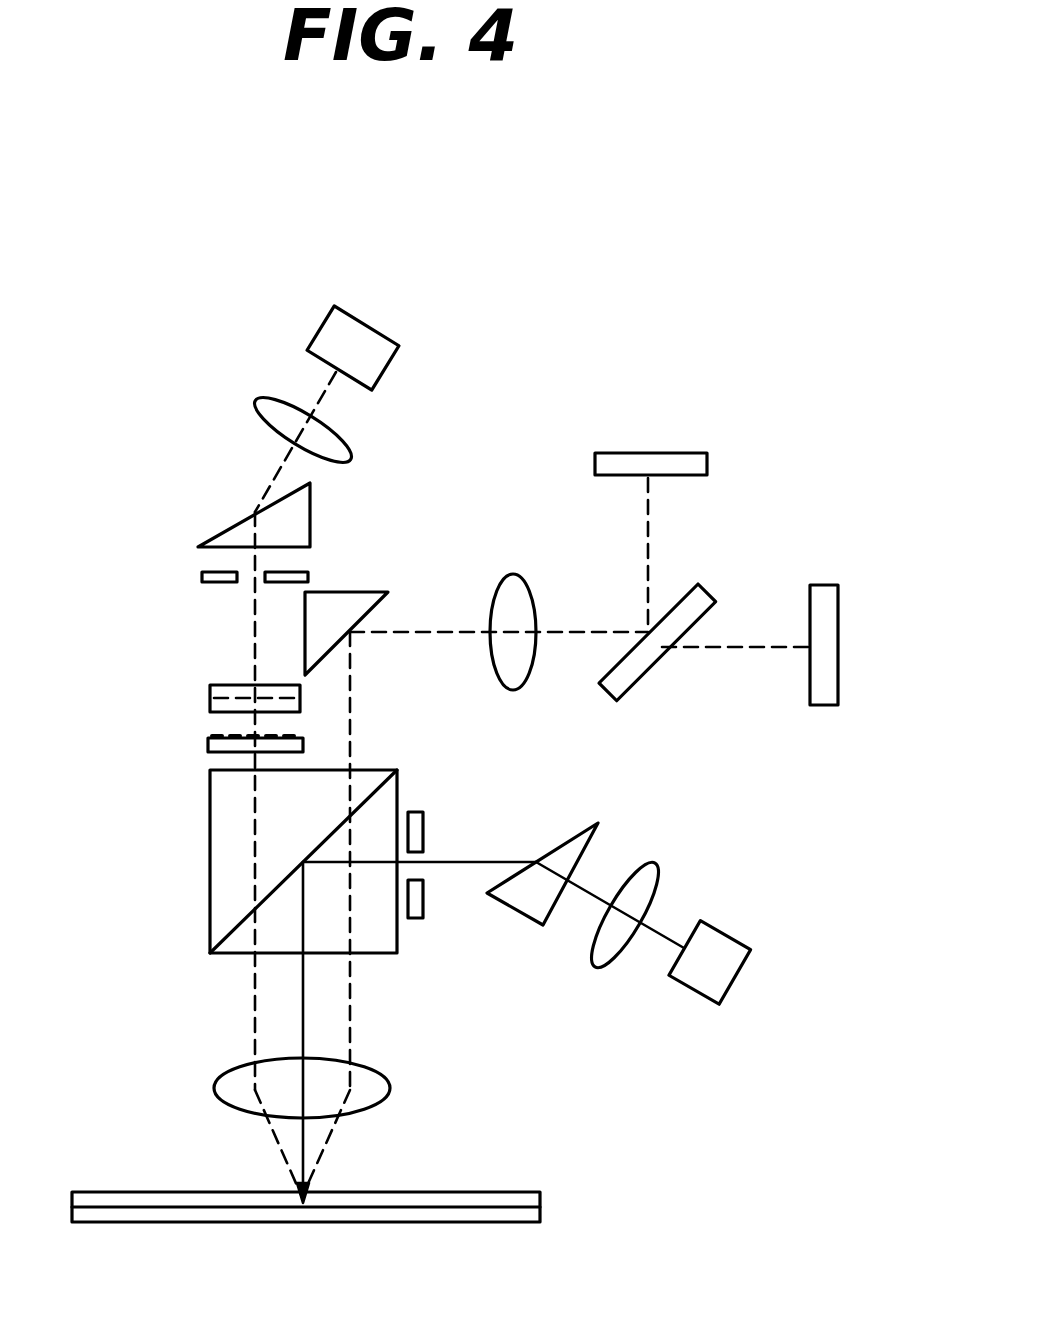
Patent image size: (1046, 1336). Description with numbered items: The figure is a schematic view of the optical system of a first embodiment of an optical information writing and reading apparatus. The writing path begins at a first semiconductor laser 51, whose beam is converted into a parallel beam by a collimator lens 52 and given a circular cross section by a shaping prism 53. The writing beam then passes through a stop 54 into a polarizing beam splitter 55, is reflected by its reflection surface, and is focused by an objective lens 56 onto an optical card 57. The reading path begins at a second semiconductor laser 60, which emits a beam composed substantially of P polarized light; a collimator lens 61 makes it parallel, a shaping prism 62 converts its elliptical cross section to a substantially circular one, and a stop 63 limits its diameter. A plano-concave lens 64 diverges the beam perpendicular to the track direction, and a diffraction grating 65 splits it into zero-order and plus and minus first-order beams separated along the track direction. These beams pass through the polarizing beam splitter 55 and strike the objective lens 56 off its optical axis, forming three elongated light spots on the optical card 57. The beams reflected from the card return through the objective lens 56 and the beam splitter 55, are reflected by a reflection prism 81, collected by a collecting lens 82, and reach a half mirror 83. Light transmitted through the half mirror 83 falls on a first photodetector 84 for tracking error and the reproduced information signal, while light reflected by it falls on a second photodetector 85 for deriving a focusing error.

The first semiconductor laser 51 is at (750, 948).
The collimator lens 52 is at (658, 866).
The shaping prism 53 is at (598, 823).
The stop 54 is at (425, 817).
The polarizing beam splitter 55 is at (208, 820).
The objective lens 56 is at (220, 1078).
The optical card 57 is at (128, 1190).
The second semiconductor laser 60 is at (380, 330).
The collimator lens 61 is at (260, 397).
The shaping prism 62 is at (217, 535).
The stop 63 is at (200, 573).
The plano-concave lens 64 is at (210, 687).
The diffraction grating 65 is at (208, 739).
The reflection prism 81 is at (376, 590).
The collecting lens 82 is at (513, 574).
The half mirror 83 is at (707, 600).
The first photodetector 84 is at (840, 593).
The second photodetector 85 is at (652, 453).